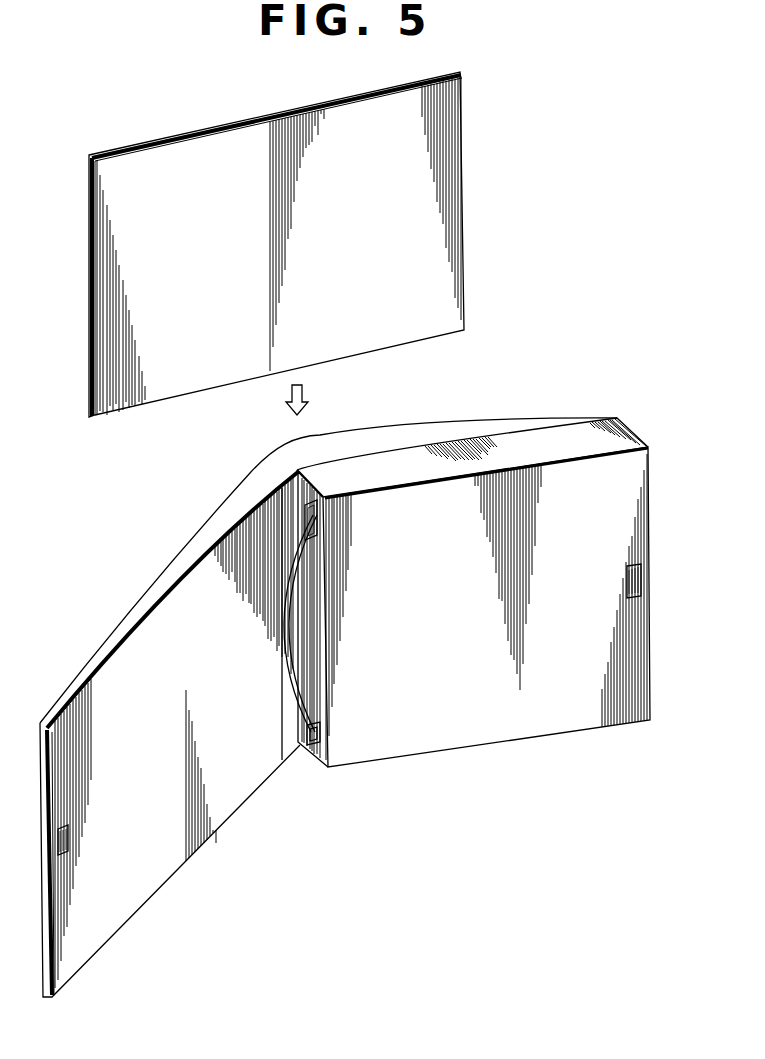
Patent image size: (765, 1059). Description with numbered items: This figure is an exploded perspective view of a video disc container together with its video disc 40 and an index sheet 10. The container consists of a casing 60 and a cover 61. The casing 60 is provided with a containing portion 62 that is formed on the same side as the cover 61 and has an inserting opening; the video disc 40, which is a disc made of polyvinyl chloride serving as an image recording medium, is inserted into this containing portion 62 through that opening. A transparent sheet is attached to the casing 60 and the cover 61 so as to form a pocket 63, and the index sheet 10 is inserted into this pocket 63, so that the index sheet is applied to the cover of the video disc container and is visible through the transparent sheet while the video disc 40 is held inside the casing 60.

The disc cartridge / recording medium 10 is at (442, 223).
The video disc 40 is at (304, 615).
The casing 60 is at (472, 713).
The cover 61 is at (165, 852).
The containing portion 62 is at (311, 518).
The pocket 63 is at (469, 429).